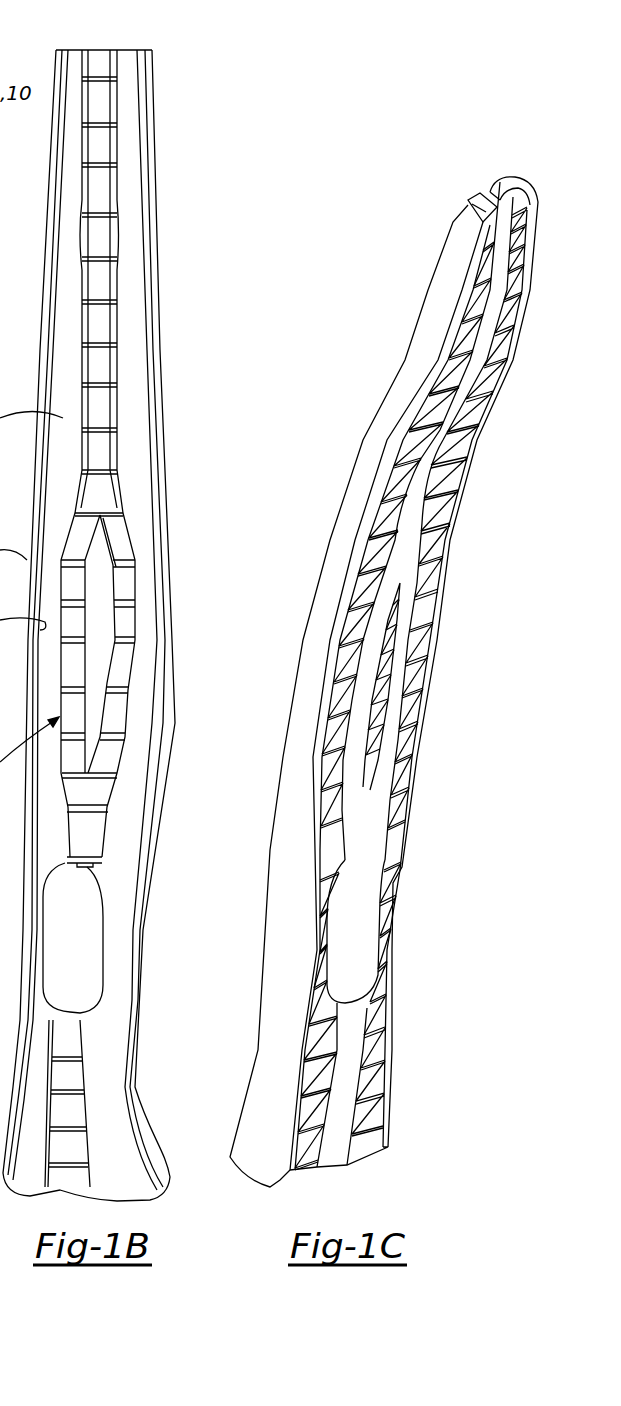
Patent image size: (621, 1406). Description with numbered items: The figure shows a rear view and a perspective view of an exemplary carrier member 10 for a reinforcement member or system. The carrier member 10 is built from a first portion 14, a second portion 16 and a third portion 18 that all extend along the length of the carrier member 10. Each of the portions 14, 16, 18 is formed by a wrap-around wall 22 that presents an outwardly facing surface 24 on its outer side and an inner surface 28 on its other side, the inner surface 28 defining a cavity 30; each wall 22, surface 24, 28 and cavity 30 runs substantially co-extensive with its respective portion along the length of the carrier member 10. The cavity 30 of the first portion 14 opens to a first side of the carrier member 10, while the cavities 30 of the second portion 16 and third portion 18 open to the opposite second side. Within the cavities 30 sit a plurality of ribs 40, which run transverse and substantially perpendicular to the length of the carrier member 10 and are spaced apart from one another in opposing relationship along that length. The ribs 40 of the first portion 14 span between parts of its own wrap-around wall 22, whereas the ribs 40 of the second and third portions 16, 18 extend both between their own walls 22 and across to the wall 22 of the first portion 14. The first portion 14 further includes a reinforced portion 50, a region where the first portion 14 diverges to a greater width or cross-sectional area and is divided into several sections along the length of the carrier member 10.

In FIG. 1B, the carrier member 10 is at (202, 88).
In FIG. 1C, the carrier member 10 is at (514, 355).
In FIG. 1B, the first portion 14 is at (95, 297).
In FIG. 1C, the first portion 14 is at (443, 368).
In FIG. 1B, the second portion 16 is at (130, 470).
In FIG. 1C, the second portion 16 is at (370, 565).
In FIG. 1C, the third portion 18 is at (443, 573).
In FIG. 1B, the wall 22 is at (168, 530).
In FIG. 1C, the wall 22 is at (470, 453).
In FIG. 1B, the outwardly facing surface 24 is at (150, 590).
In FIG. 1C, the outwardly facing surface 24 is at (443, 517).
In FIG. 1B, the inner surface 28 is at (100, 400).
In FIG. 1B, the cavity 30 is at (108, 373).
In FIG. 1B, the ribs 40 is at (100, 253).
In FIG. 1C, the ribs 40 is at (420, 730).
In FIG. 1C, the reinforced portion 50 is at (392, 833).